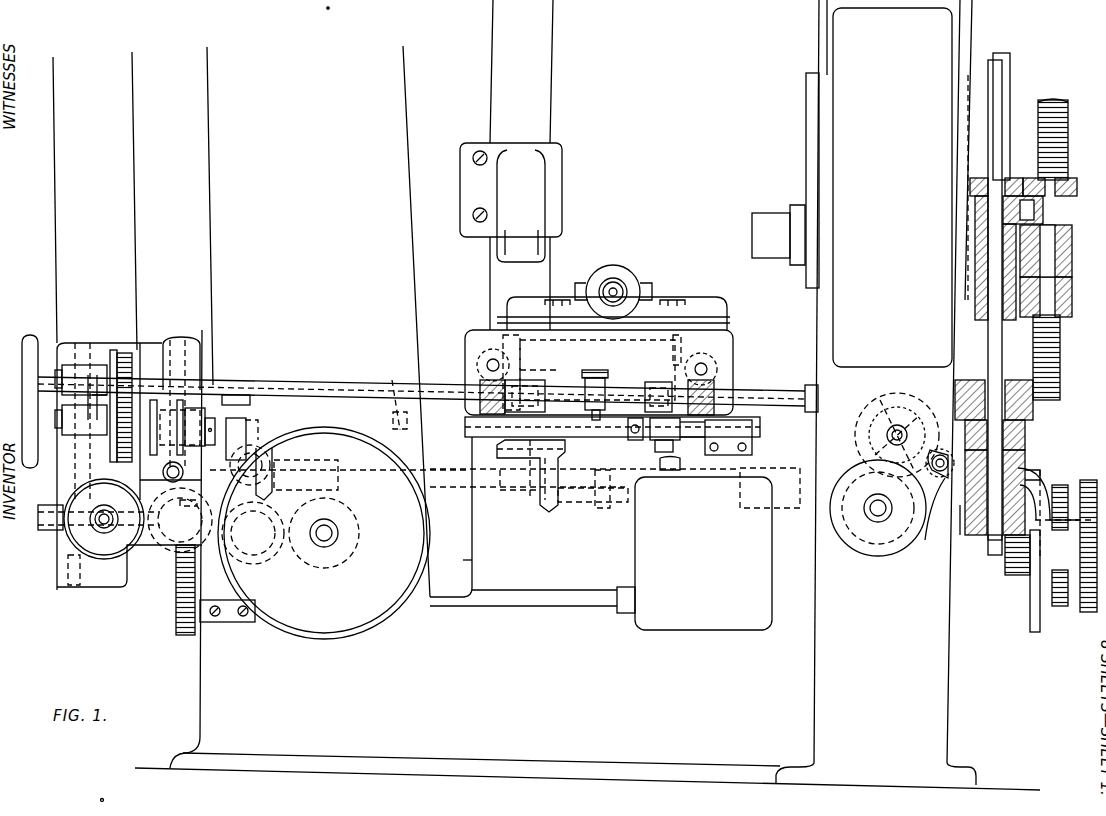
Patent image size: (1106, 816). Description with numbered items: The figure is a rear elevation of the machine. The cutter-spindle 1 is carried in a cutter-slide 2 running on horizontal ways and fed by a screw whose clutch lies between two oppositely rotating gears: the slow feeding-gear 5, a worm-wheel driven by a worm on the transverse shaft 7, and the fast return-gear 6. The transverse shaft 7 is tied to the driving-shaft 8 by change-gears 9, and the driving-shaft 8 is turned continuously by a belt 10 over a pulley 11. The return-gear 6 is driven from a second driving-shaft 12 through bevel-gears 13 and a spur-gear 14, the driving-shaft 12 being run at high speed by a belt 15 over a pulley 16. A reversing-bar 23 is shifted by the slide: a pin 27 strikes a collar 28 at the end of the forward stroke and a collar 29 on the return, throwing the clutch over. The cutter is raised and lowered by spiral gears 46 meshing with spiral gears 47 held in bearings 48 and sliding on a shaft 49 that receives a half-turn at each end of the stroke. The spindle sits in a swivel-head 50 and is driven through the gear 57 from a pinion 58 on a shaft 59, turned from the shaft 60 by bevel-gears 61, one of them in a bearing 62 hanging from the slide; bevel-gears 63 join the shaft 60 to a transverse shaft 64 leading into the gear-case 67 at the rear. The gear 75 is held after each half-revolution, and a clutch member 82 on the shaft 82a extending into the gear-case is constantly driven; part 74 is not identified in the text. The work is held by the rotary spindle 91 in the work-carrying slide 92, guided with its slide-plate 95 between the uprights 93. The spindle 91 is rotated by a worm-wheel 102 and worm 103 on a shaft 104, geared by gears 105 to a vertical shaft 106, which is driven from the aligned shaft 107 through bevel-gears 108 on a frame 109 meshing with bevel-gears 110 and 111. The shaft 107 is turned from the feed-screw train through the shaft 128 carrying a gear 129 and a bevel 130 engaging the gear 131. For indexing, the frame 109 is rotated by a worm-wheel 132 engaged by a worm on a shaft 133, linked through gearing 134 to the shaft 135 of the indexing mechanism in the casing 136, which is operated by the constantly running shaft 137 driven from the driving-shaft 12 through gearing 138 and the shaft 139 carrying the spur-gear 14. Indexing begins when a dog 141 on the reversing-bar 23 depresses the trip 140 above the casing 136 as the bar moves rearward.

The cutter-spindle 1 is at (620, 287).
The cutter-slide 2 is at (466, 340).
The feeding-gear 5 is at (178, 338).
The return-gear 6 is at (82, 345).
The transverse shaft 7 is at (163, 478).
The driving-shaft 8 is at (332, 530).
The change-gears 9 is at (270, 560).
The belt 10 is at (412, 272).
The pulley 11 is at (375, 620).
The second driving-shaft 12 is at (104, 535).
The bevel-gears 13 is at (60, 580).
The spur-gear 14 is at (75, 548).
The belt 15 is at (135, 272).
The pulley 16 is at (127, 590).
The reversing-bar 23 is at (448, 425).
The pin 27 is at (600, 400).
The collar 28 is at (628, 432).
The collar 29 is at (393, 395).
The spiral gears 46 is at (477, 361).
The spiral gears 47 is at (480, 382).
The bearings 48 is at (540, 400).
The shaft 49 is at (340, 390).
The swivel-head 50 is at (718, 318).
The driven gear 57 is at (676, 365).
The spur-pinion 58 is at (540, 352).
The shaft 59 is at (540, 372).
The shaft 60 is at (500, 490).
The bevel-gears 61 is at (497, 462).
The bearing 62 is at (580, 502).
The bevel-gears 63 is at (285, 405).
The transverse shaft 64 is at (262, 445).
The gear-case 67 is at (465, 563).
The gear 74 is at (125, 355).
The gear 75 is at (117, 432).
The clutch member 82 is at (195, 400).
The shaft 82a is at (230, 420).
The rotary spindle 91 is at (775, 210).
The work-carrying slide 92 is at (808, 118).
The uprights 93 is at (826, 8).
The slide-plate 95 is at (980, 80).
The worm-wheel 102 is at (1068, 150).
The worm 103 is at (1072, 245).
The shaft 104 is at (1055, 210).
The gears 105 is at (1020, 185).
The vertical shaft 106 is at (1005, 90).
The shaft 107 is at (1025, 462).
The bevel-gears 108 is at (958, 400).
The frame 109 is at (1025, 430).
The bevel-gear 110 is at (1068, 370).
The bevel-gear 111 is at (1030, 445).
The shaft 128 is at (1065, 530).
The gear 129 is at (1080, 606).
The bevel 130 is at (1012, 570).
The gear 131 is at (968, 532).
The worm-wheel 132 is at (1040, 475).
The shaft 133 is at (930, 550).
The gearing 134 is at (865, 447).
The shaft 135 is at (870, 525).
The indexing-casing 136 is at (730, 622).
The constantly-running shaft 137 is at (575, 620).
The gearing 138 is at (180, 575).
The shaft 139 is at (38, 528).
The trip 140 is at (680, 465).
The dog 141 is at (655, 448).